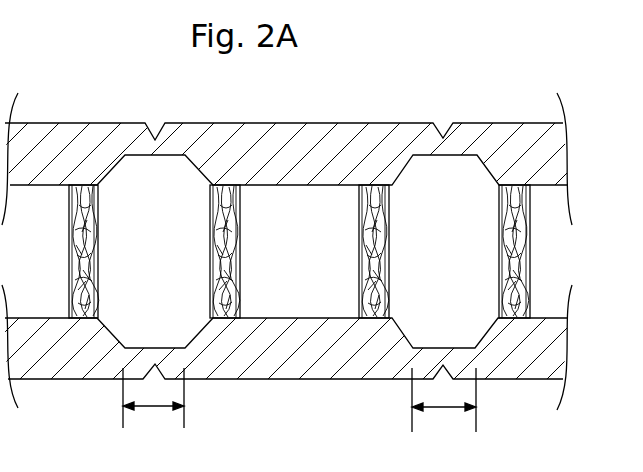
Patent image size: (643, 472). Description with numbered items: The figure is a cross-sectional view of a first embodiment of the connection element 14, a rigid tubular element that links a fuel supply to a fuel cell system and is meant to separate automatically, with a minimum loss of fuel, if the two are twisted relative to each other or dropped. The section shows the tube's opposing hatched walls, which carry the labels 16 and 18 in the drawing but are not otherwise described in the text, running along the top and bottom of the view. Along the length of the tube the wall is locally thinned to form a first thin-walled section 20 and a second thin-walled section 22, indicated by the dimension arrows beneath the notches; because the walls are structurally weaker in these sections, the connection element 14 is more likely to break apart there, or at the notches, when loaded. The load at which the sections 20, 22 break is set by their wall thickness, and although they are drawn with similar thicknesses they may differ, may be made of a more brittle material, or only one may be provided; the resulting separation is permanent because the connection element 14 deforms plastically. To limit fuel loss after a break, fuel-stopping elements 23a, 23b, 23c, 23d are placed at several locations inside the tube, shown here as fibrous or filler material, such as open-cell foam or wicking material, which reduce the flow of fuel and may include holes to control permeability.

The connection element 14 is at (352, 105).
The upper plate 16 is at (92, 133).
The lower plate 18 is at (46, 380).
The first thin-walled section 20 is at (155, 410).
The second thin-walled section 22 is at (443, 410).
The fuel-stopping element 23a is at (69, 248).
The fuel-stopping element 23b is at (240, 254).
The fuel-stopping element 23c is at (389, 253).
The fuel-stopping element 23d is at (530, 255).